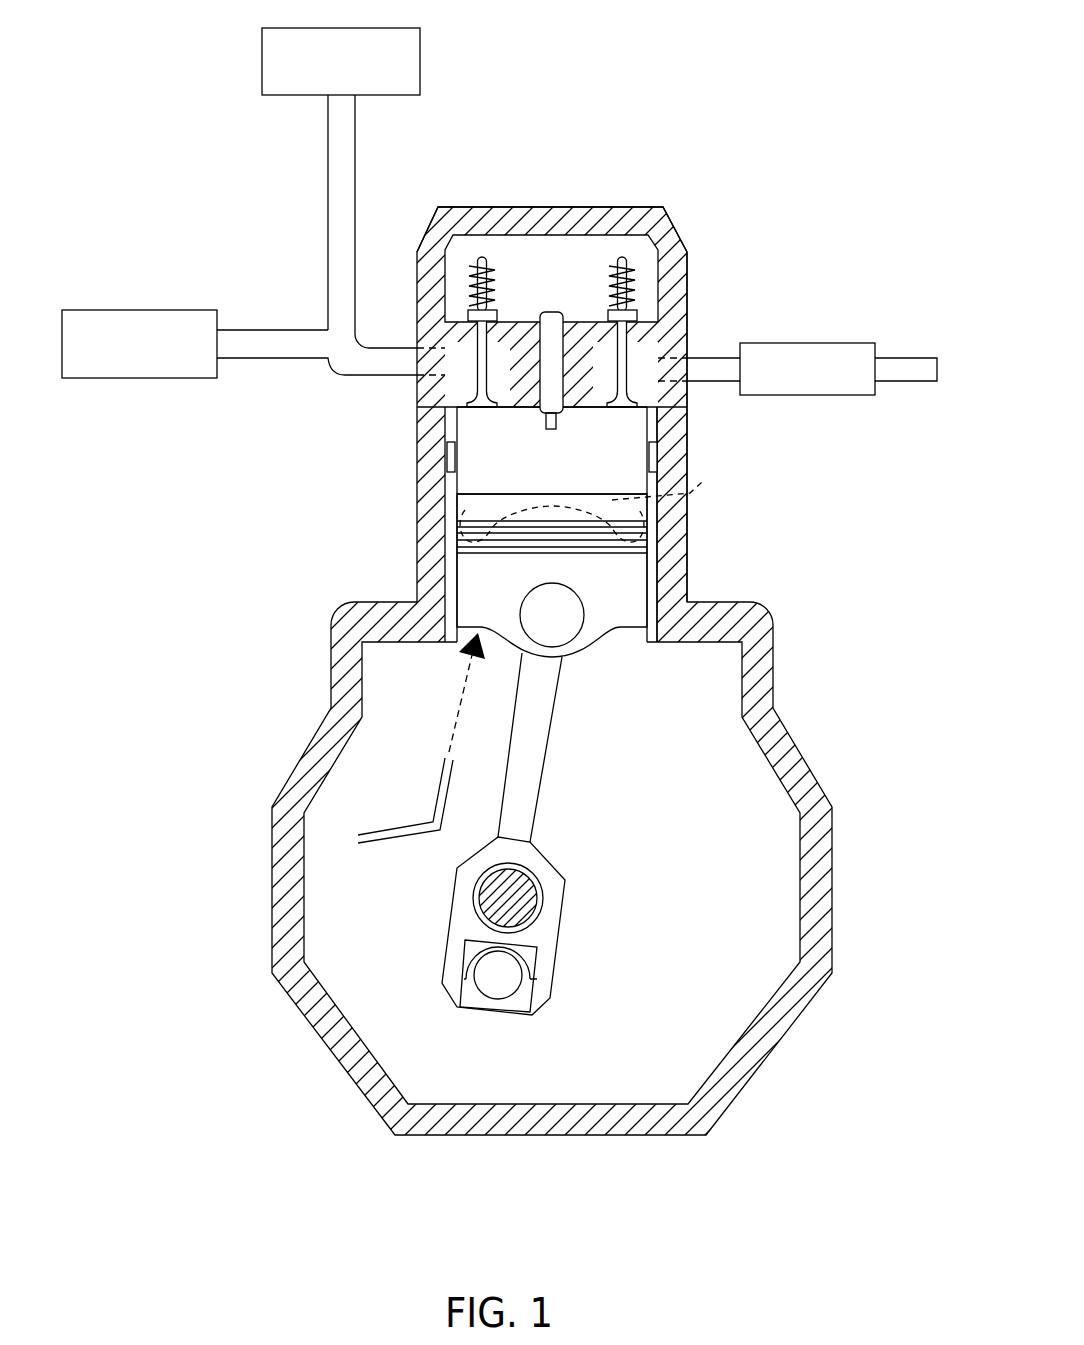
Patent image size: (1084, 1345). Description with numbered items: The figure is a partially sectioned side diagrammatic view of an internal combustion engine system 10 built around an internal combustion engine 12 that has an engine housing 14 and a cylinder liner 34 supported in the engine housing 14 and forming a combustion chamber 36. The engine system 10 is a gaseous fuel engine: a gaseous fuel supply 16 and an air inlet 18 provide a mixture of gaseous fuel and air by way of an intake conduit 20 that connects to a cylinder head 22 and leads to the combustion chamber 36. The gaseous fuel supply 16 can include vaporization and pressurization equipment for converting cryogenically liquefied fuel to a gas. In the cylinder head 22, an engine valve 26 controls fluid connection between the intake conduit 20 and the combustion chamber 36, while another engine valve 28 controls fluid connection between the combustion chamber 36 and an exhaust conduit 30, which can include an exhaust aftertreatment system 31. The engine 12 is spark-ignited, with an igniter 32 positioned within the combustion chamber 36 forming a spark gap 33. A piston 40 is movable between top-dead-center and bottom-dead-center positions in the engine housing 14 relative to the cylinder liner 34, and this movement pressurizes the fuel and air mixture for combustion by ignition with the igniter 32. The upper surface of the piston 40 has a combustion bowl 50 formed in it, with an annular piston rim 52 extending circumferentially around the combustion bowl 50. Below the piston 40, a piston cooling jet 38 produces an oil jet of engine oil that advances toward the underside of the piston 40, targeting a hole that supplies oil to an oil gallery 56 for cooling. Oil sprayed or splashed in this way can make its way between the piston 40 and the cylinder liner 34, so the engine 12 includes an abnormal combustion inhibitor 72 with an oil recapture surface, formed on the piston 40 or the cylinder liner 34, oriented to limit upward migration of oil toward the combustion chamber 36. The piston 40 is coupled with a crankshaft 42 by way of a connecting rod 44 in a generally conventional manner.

The internal combustion engine system 10 is at (499, 581).
The internal combustion engine 12 is at (782, 609).
The engine housing 14 is at (690, 524).
The gaseous fuel supply 16 is at (421, 57).
The air inlet 18 is at (137, 380).
The intake conduit 20 is at (340, 378).
The cylinder head 22 is at (689, 283).
The engine valve 26 is at (472, 354).
The engine valve 28 is at (645, 345).
The exhaust conduit 30 is at (713, 383).
The exhaust aftertreatment system 31 is at (853, 397).
The igniter 32 is at (561, 410).
The spark gap 33 is at (540, 435).
The cylinder liner 34 is at (665, 571).
The combustion chamber 36 is at (476, 481).
The piston cooling jet 38 is at (395, 845).
The piston 40 is at (457, 576).
The crankshaft 42 is at (533, 899).
The connecting rod 44 is at (556, 751).
The combustion bowl 50 is at (617, 494).
The annular piston rim 52 is at (636, 497).
The oil gallery 56 is at (665, 471).
The abnormal combustion inhibitor 72 is at (467, 453).